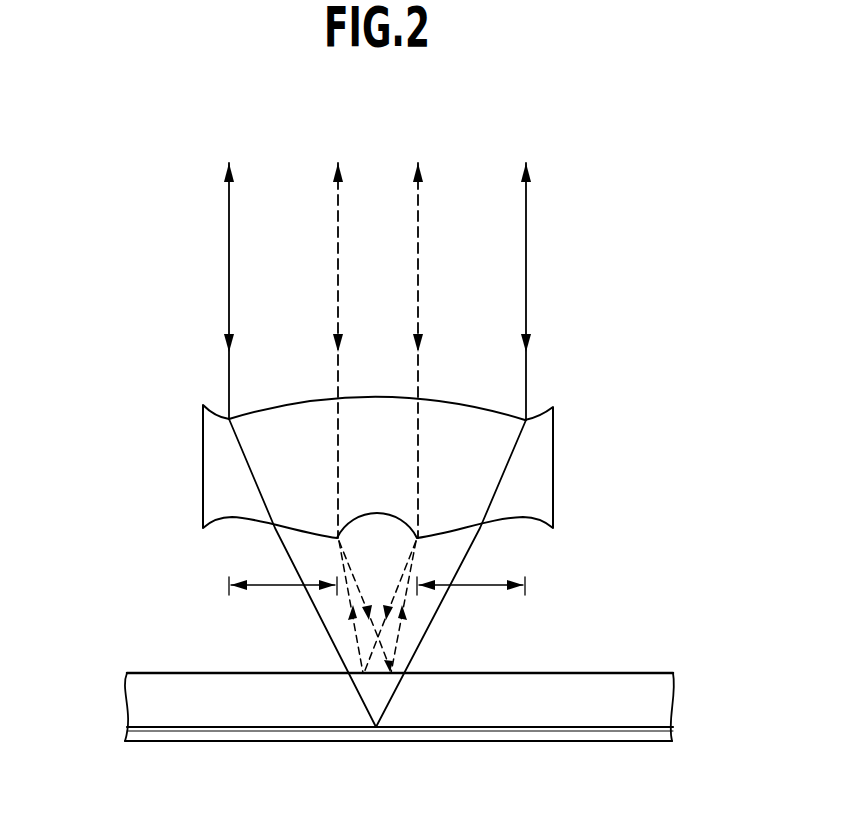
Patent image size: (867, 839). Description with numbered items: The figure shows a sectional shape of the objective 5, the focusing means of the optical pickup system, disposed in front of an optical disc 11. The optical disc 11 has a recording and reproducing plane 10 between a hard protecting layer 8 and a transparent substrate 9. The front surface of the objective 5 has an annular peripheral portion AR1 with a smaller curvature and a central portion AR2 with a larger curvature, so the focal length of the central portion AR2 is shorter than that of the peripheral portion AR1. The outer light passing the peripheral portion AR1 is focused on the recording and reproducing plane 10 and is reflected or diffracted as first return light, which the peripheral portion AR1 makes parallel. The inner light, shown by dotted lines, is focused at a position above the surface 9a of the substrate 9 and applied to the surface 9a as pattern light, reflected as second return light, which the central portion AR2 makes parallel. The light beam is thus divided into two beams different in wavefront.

The objective 5 is at (213, 462).
The hard protecting layer 8 is at (143, 742).
The transparent substrate 9 is at (355, 663).
The surface of the substrate 9a is at (152, 672).
The recording and reproducing plane 10 is at (155, 727).
The optical disc 11 is at (396, 679).
The annular peripheral portion AR1 is at (273, 590).
The central portion AR2 is at (383, 563).